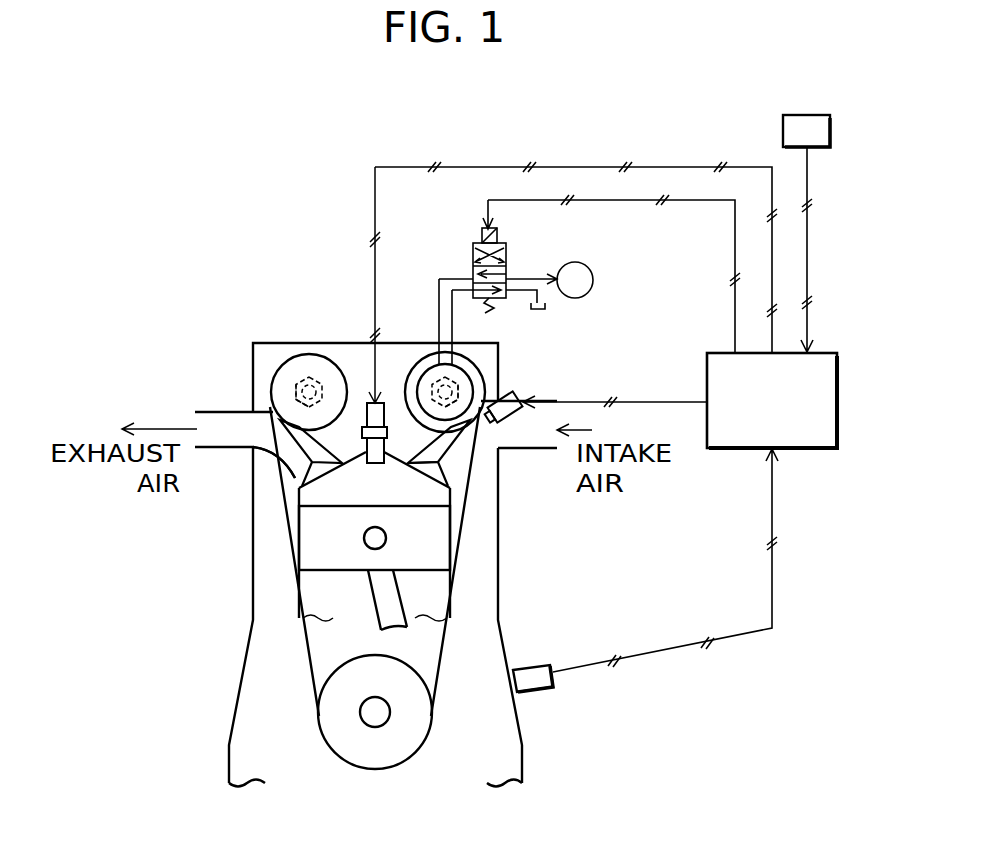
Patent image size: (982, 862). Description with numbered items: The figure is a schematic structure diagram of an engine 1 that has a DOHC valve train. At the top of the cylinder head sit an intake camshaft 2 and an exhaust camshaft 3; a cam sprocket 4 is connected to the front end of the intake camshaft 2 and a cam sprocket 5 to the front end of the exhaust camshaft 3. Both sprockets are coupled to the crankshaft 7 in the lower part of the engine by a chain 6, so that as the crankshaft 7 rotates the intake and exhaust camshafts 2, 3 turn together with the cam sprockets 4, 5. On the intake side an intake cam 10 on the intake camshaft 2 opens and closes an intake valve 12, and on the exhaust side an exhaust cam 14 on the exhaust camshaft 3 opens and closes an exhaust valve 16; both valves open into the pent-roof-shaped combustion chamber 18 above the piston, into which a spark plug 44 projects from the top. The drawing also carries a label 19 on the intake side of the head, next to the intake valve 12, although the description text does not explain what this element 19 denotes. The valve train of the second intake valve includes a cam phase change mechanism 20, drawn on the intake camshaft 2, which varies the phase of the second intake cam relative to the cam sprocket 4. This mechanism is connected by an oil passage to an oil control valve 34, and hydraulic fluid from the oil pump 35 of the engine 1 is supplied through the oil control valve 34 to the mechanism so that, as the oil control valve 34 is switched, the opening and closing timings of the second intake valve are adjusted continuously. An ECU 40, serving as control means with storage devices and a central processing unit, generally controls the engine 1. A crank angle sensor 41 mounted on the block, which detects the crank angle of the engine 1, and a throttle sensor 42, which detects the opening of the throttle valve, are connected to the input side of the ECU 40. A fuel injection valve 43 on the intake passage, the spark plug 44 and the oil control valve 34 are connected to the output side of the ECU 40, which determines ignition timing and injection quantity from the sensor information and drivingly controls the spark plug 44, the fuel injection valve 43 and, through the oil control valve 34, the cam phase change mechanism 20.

The engine 1 is at (195, 646).
The intake camshaft 2 is at (432, 378).
The exhaust camshaft 3 is at (314, 376).
The cam sprocket 4 is at (470, 365).
The cam sprocket 5 is at (283, 362).
The chain 6 is at (443, 643).
The crankshaft 7 is at (372, 720).
The intake cam 10 is at (482, 395).
The intake valve 12 is at (432, 470).
The exhaust cam 14 is at (290, 397).
The exhaust valve 16 is at (317, 468).
The combustion chamber 18 is at (315, 498).
The intake valve 19 is at (452, 461).
The cam phase change mechanism 20 is at (423, 370).
The oil control valve 34 is at (506, 252).
The oil pump 35 is at (590, 266).
The ECU 40 is at (718, 351).
The crank angle sensor 41 is at (540, 691).
The throttle sensor 42 is at (781, 128).
The fuel injection valve 43 is at (528, 394).
The spark plug 44 is at (376, 340).